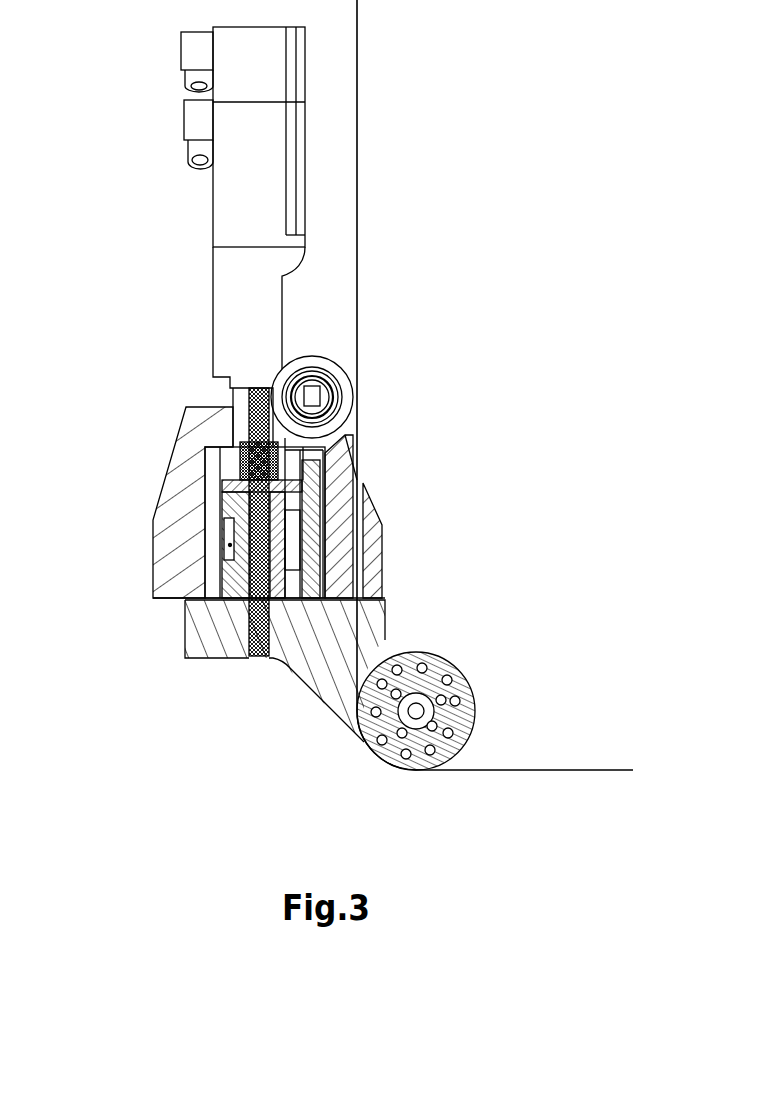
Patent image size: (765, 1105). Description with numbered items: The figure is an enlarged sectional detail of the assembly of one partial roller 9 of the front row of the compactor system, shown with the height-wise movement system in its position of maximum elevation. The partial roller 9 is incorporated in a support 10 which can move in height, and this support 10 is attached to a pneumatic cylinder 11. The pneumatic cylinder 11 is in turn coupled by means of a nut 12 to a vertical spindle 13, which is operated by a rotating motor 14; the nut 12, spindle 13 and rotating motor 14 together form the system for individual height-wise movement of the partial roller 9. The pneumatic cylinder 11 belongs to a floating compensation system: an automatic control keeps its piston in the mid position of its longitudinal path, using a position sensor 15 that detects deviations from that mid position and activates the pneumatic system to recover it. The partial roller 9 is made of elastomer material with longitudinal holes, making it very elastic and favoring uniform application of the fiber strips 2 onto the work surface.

The fiber strips 2 is at (357, 238).
The partial roller 9 is at (463, 708).
The support 10 is at (323, 653).
The pneumatic cylinder 11 is at (155, 596).
The nut 12 is at (238, 463).
The vertical spindle 13 is at (255, 412).
The rotating motor 14 is at (245, 208).
The position sensor 15 is at (222, 519).